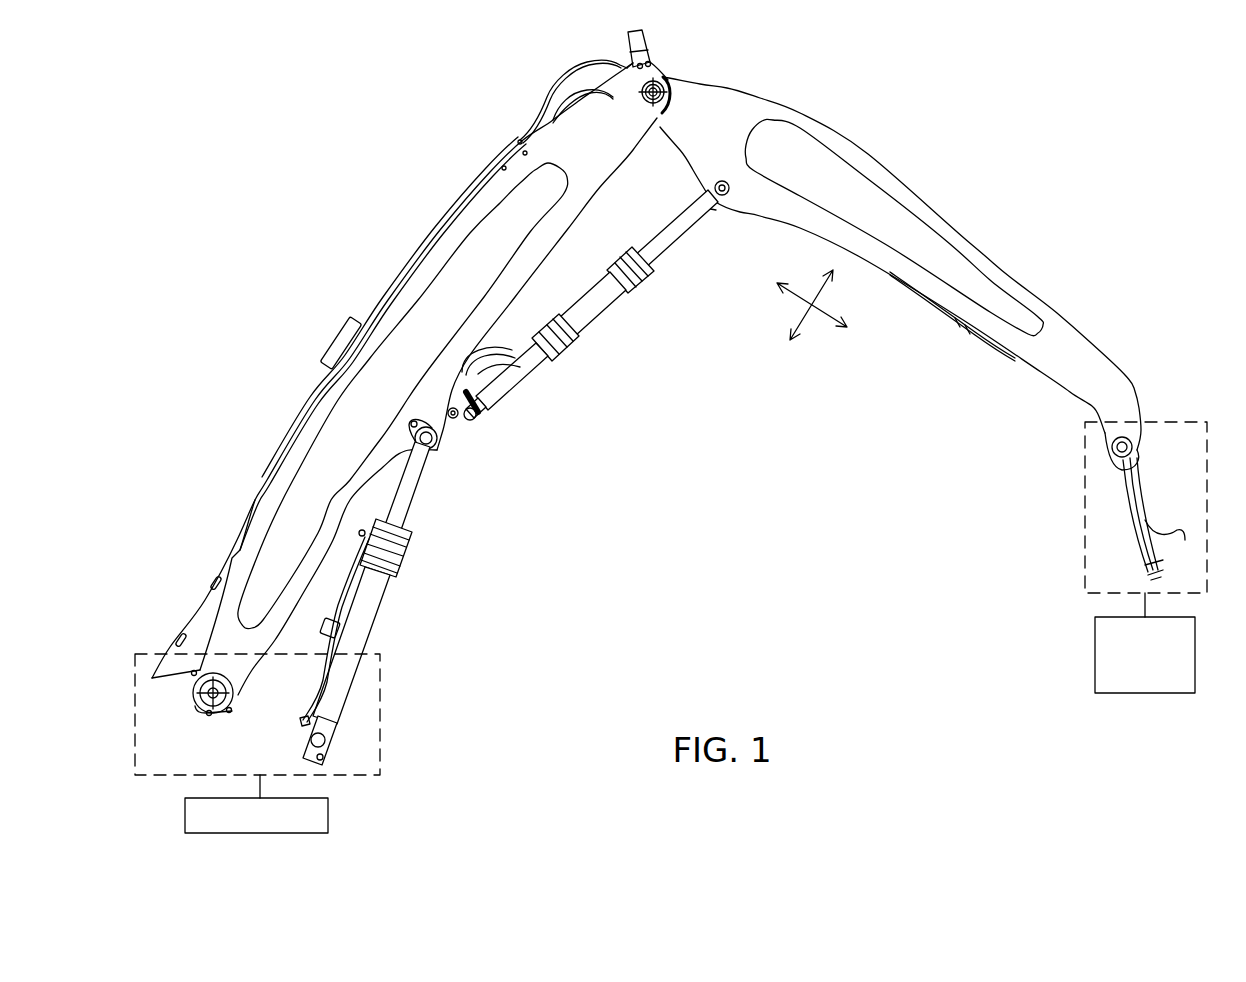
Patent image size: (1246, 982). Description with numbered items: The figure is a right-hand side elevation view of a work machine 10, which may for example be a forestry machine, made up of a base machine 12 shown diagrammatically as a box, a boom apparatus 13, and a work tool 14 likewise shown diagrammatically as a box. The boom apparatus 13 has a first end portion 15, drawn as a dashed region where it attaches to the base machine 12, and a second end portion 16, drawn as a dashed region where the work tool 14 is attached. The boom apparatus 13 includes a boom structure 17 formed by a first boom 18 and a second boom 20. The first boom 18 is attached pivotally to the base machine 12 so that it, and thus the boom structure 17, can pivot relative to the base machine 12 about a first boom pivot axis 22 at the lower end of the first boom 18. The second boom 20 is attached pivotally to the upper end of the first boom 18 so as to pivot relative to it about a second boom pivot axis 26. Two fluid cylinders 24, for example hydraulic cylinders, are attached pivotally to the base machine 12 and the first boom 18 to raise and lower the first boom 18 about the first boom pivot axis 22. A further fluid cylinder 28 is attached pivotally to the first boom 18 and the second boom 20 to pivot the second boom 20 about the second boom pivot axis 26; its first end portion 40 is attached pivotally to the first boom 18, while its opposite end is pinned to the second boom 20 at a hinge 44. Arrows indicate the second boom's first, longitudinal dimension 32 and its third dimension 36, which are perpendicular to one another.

The work machine 10 is at (180, 154).
The base machine 12 is at (330, 817).
The boom apparatus 13 is at (585, 418).
The work tool 14 is at (1095, 660).
The first end portion 15 is at (395, 697).
The second end portion 16 is at (1083, 534).
The boom structure 17 is at (426, 196).
The first boom 18 is at (398, 305).
The second boom 20 is at (910, 203).
The first boom pivot axis 22 is at (228, 698).
The fluid cylinders 24 is at (370, 615).
The second boom pivot axis 26 is at (668, 82).
The fluid cylinder 28 is at (590, 320).
The first, longitudinal dimension 32 is at (817, 315).
The third dimension 36 is at (802, 313).
The first end portion 40 is at (483, 395).
The hinge 44 is at (722, 198).